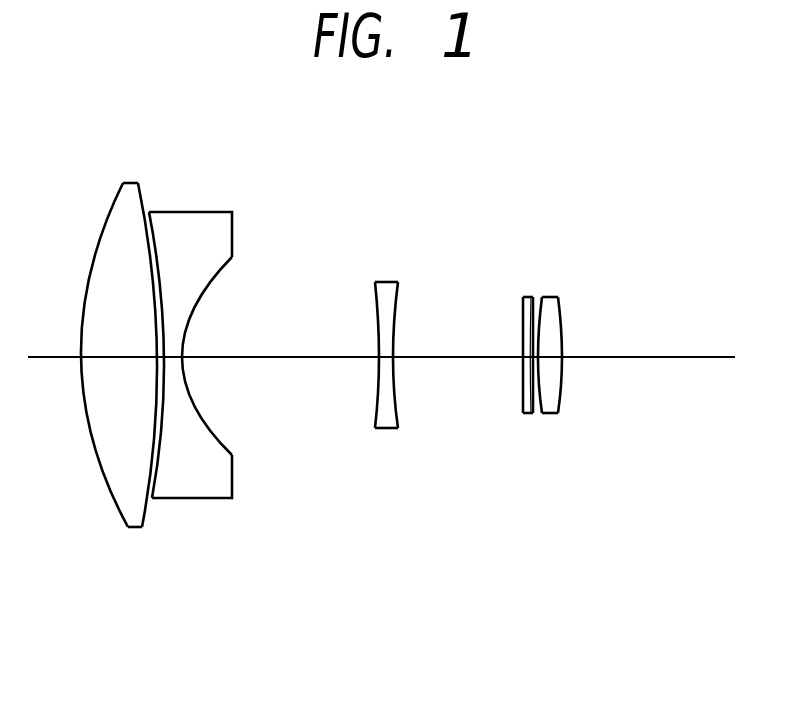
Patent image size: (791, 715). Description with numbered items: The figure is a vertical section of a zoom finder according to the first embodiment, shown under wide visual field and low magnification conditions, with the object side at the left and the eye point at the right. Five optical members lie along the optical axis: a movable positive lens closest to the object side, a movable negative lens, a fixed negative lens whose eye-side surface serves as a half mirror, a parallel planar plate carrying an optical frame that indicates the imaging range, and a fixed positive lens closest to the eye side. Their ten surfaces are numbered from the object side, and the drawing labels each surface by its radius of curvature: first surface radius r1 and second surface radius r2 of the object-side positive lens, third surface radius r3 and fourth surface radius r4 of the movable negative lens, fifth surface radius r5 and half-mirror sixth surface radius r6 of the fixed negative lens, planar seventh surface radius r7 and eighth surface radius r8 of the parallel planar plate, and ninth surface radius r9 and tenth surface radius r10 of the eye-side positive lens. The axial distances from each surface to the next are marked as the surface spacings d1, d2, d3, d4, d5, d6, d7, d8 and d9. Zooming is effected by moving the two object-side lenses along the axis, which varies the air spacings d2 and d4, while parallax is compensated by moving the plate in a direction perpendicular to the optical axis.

The radius of curvature of first surface r1 is at (116, 205).
The radius of curvature of second surface r2 is at (141, 200).
The radius of curvature of third surface r3 is at (150, 230).
The radius of curvature of fourth surface r4 is at (212, 284).
The radius of curvature of fifth surface r5 is at (377, 293).
The radius of curvature of sixth surface r6 is at (397, 297).
The radius of curvature of seventh surface r7 is at (523, 313).
The radius of curvature of eighth surface r8 is at (530, 320).
The radius of curvature of ninth surface r9 is at (541, 307).
The radius of curvature of tenth surface r10 is at (562, 310).
The axial surface spacing from first to second surface d1 is at (120, 358).
The axial surface spacing from second to third surface d2 is at (162, 358).
The axial surface spacing from third to fourth surface d3 is at (180, 358).
The axial surface spacing from fourth to fifth surface d4 is at (302, 358).
The axial surface spacing from fifth to sixth surface d5 is at (386, 358).
The axial surface spacing from sixth to seventh surface d6 is at (470, 358).
The axial surface spacing from seventh to eighth surface d7 is at (527, 360).
The axial surface spacing from eighth to ninth surface d8 is at (533, 360).
The axial surface spacing from ninth to tenth surface d9 is at (547, 360).